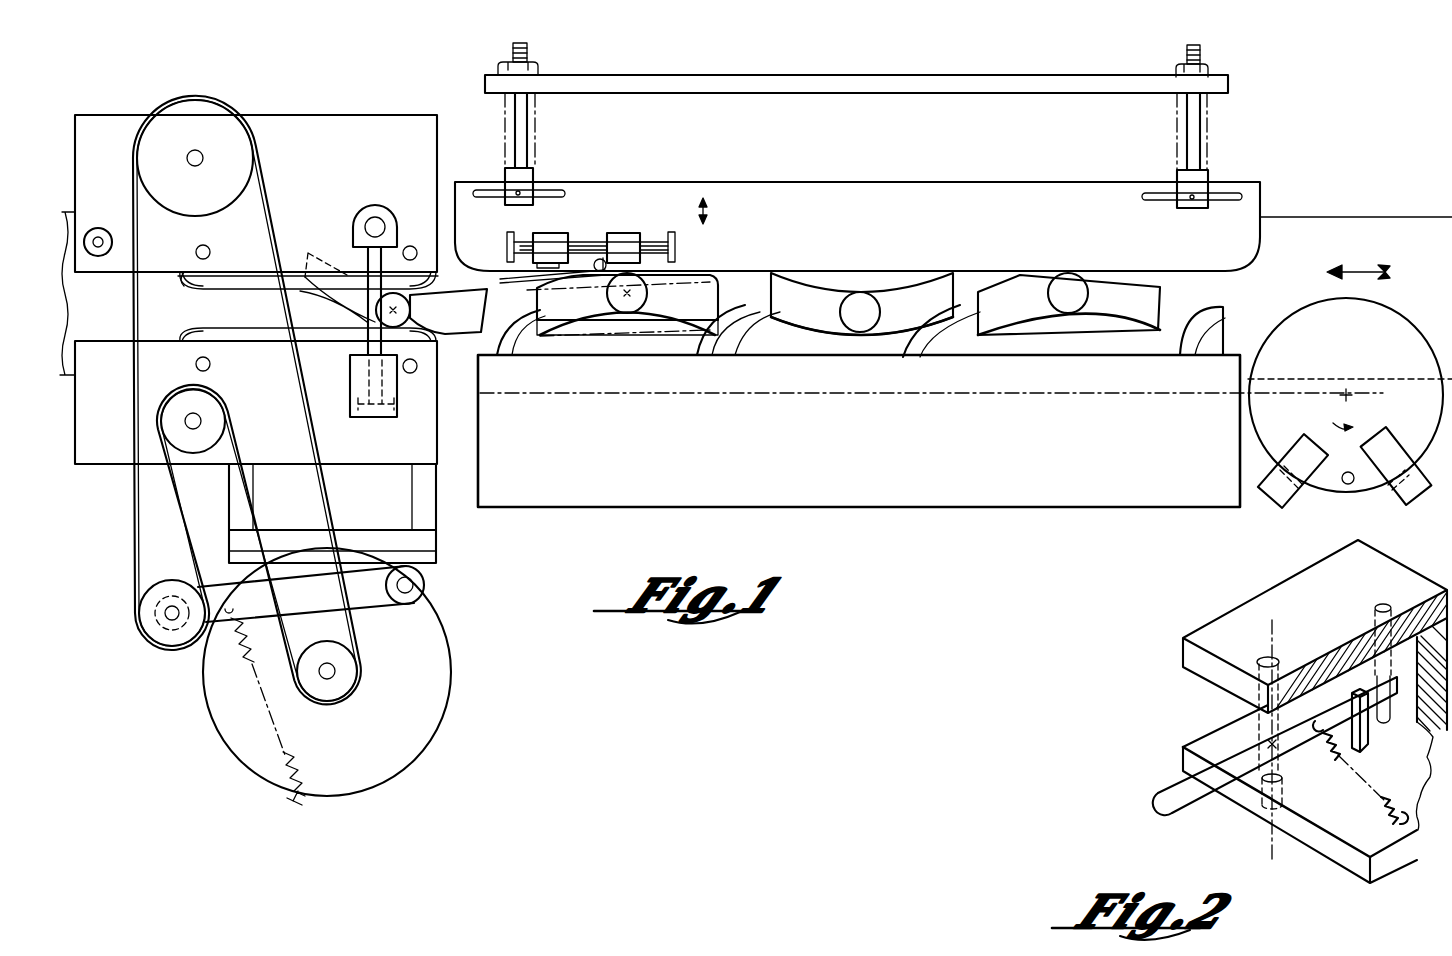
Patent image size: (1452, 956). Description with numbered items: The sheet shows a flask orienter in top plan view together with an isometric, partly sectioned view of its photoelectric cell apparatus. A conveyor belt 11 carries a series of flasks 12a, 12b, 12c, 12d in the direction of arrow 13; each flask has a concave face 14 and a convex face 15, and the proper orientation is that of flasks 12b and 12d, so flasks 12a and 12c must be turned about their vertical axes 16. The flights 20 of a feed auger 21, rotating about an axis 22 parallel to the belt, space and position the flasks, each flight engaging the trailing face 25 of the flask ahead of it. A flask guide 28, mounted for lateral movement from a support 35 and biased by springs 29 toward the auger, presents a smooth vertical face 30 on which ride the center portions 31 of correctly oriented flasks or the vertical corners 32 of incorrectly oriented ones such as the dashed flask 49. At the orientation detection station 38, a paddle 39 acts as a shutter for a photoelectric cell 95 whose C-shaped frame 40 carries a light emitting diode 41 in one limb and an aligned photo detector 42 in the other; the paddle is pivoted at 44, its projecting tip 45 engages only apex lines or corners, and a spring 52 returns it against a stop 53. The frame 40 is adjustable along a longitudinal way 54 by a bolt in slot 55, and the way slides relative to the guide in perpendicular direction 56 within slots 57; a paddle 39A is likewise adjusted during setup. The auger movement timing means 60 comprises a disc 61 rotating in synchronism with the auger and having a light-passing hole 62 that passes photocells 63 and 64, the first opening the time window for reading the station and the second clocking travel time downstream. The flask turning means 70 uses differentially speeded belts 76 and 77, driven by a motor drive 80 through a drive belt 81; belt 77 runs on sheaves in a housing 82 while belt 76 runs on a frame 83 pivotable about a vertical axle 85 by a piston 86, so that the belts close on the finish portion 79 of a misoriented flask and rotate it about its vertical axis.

In FIG. 1, the conveyor belt 11 is at (1382, 236).
In FIG. 1, the flask 12a is at (448, 311).
In FIG. 1, the flask 12b is at (622, 305).
In FIG. 1, the flask 12c is at (862, 304).
In FIG. 1, the flask 12d is at (1069, 305).
In FIG. 1, the direction of movement arrow 13 is at (1352, 262).
In FIG. 1, the concave face 14 is at (838, 290).
In FIG. 1, the convex face 15 is at (815, 330).
In FIG. 1, the vertical axis 16 is at (368, 325).
In FIG. 1, the flights 20 is at (935, 330).
In FIG. 1, the feed auger 21 is at (993, 348).
In FIG. 1, the auger axis 22 is at (885, 395).
In FIG. 1, the trailing face 25 is at (770, 322).
In FIG. 1, the flask guide 28 is at (915, 215).
In FIG. 1, the resilient springs 29 is at (540, 125).
In FIG. 1, the vertical guide face 30 is at (998, 272).
In FIG. 1, the center portion 31 is at (870, 330).
In FIG. 1, the vertical corners 32 is at (530, 330).
In FIG. 1, the support 35 is at (880, 75).
In FIG. 1, the orientation detection station 38 is at (598, 230).
In FIG. 1, the paddle 39 is at (500, 280).
In FIG. 2, the paddle 39 is at (1178, 810).
In FIG. 1, the paddle 39A is at (625, 234).
In FIG. 1, the C-shaped frame 40 is at (548, 240).
In FIG. 2, the C-shaped frame 40 is at (1260, 615).
In FIG. 2, the light emitting diode 41 is at (1279, 662).
In FIG. 2, the photo detector 42 is at (1268, 815).
In FIG. 2, the pivot 44 is at (1386, 680).
In FIG. 2, the projecting tip 45 is at (1187, 797).
In FIG. 1, the flask 49 is at (640, 332).
In FIG. 2, the spring 52 is at (1340, 765).
In FIG. 2, the stop 53 is at (1365, 730).
In FIG. 1, the longitudinal way 54 is at (515, 233).
In FIG. 1, the longitudinal slot 55 is at (580, 235).
In FIG. 1, the perpendicular direction 56 is at (703, 200).
In FIG. 1, the slots 57 is at (680, 240).
In FIG. 1, the auger movement timing means 60 is at (1254, 524).
In FIG. 1, the disc 61 is at (1350, 395).
In FIG. 1, the light-passing hole 62 is at (1340, 485).
In FIG. 1, the orientation sample switch photocell 63 is at (1276, 482).
In FIG. 1, the second photocell 64 is at (1410, 448).
In FIG. 1, the flask turning means 70 is at (110, 486).
In FIG. 1, the belt 76 is at (228, 305).
In FIG. 1, the belt 77 is at (250, 310).
In FIG. 1, the finish portion 79 is at (440, 340).
In FIG. 1, the motor drive 80 is at (295, 676).
In FIG. 1, the drive belt 81 is at (356, 652).
In FIG. 1, the frame or housing 82 is at (250, 419).
In FIG. 1, the frame 83 is at (300, 187).
In FIG. 1, the vertical axle 85 is at (98, 235).
In FIG. 1, the piston 86 is at (345, 400).
In FIG. 2, the photoelectric cell 95 is at (1237, 718).